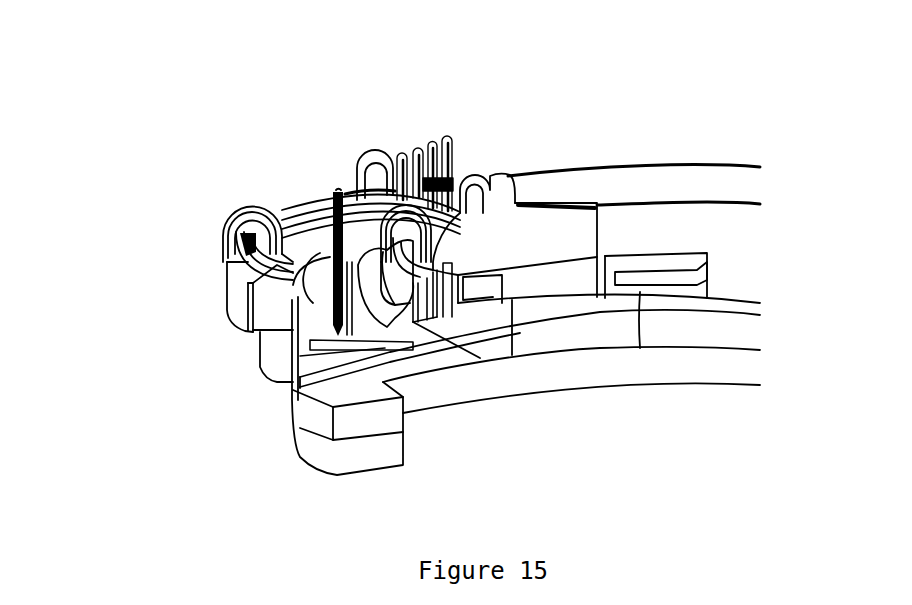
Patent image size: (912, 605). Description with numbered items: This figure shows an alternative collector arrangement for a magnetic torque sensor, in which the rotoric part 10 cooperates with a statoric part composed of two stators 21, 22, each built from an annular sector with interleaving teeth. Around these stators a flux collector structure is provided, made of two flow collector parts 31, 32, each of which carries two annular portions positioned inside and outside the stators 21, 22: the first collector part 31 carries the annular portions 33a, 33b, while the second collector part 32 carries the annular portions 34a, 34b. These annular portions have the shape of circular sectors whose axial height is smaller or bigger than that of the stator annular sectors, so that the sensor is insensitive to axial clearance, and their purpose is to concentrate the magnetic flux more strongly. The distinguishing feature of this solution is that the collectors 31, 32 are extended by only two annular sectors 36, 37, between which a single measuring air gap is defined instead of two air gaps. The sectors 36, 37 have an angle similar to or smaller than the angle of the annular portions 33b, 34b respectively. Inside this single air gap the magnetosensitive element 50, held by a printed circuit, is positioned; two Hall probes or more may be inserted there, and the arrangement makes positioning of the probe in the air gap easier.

The rotoric part 10 is at (362, 462).
The stator 21 is at (290, 386).
The stator 22 is at (640, 198).
The flow collector part 31 is at (245, 331).
The flow collector part 32 is at (597, 230).
The annular portion 33a is at (233, 291).
The annular portion 33b is at (275, 230).
The annular portion 34a is at (483, 248).
The annular portion 34b is at (397, 280).
The annular sector 36 is at (320, 273).
The annular sector 37 is at (382, 312).
The magnetosensitive element 50 is at (440, 147).